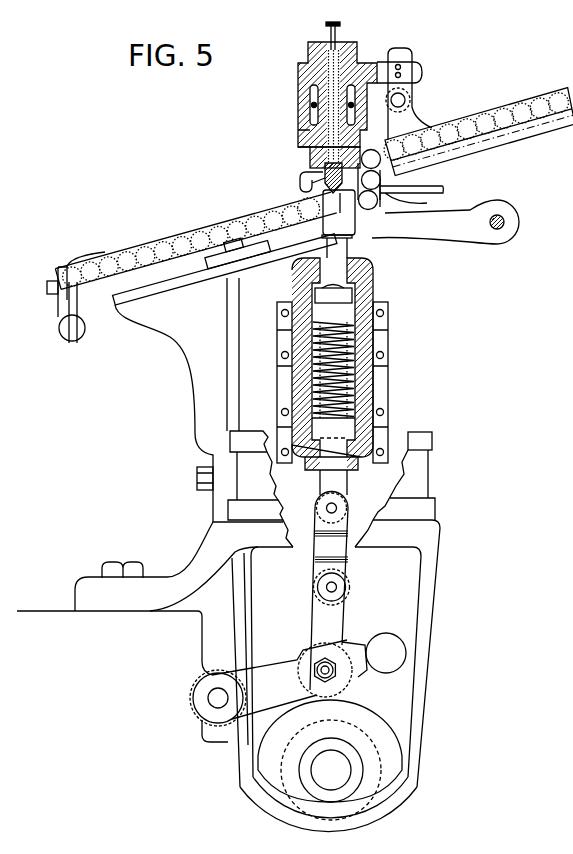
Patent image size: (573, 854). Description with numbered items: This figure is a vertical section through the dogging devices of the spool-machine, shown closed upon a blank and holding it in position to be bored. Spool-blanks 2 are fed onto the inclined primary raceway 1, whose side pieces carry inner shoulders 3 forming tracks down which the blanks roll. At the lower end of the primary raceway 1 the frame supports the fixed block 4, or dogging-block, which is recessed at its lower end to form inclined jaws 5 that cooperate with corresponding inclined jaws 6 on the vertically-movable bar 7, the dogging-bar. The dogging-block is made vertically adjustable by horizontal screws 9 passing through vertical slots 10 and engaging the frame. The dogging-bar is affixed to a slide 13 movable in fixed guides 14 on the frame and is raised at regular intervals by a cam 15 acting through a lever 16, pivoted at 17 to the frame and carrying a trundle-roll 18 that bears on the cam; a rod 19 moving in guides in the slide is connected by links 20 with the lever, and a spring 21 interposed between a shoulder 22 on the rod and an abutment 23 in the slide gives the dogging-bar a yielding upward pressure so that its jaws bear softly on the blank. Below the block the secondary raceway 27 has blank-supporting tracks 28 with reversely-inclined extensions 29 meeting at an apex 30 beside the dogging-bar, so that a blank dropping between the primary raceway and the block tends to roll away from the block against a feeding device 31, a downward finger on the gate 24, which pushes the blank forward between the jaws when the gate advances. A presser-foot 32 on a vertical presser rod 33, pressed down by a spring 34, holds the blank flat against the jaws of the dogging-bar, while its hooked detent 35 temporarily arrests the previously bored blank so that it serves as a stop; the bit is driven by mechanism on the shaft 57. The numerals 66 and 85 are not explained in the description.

The primary raceway 1 is at (479, 132).
The spool-blanks 2 is at (467, 123).
The shoulders 3 is at (480, 140).
The fixed block 4 is at (310, 158).
The inclined jaws 5 is at (303, 183).
The inclined jaws 6 is at (335, 211).
The vertically-movable bar 7 is at (320, 225).
The horizontal screws 9 is at (310, 100).
The vertical slots 10 is at (298, 83).
The slide 13 is at (367, 267).
The fixed guides 14 is at (278, 336).
The cam 15 is at (273, 742).
The lever 16 is at (279, 676).
The pivot 17 is at (210, 696).
The trundle-roll 18 is at (343, 695).
The rod 19 is at (333, 482).
The links 20 is at (343, 560).
The spring 21 is at (347, 378).
The shoulder 22 is at (347, 418).
The abutment 23 is at (388, 322).
The segmental plate or gate 24 is at (417, 190).
The secondary raceway 27 is at (193, 251).
The track 28 is at (250, 215).
The reversely-inclined extensions 29 is at (405, 203).
The apex 30 is at (343, 202).
The feeding device 31 is at (387, 208).
The presser-foot 32 is at (310, 145).
The presser rod 33 is at (338, 28).
The spring 34 is at (392, 56).
The hooked finger or detent 35 is at (300, 181).
The shaft 57 is at (323, 772).
The clip 66 is at (56, 280).
The roller 85 is at (60, 332).